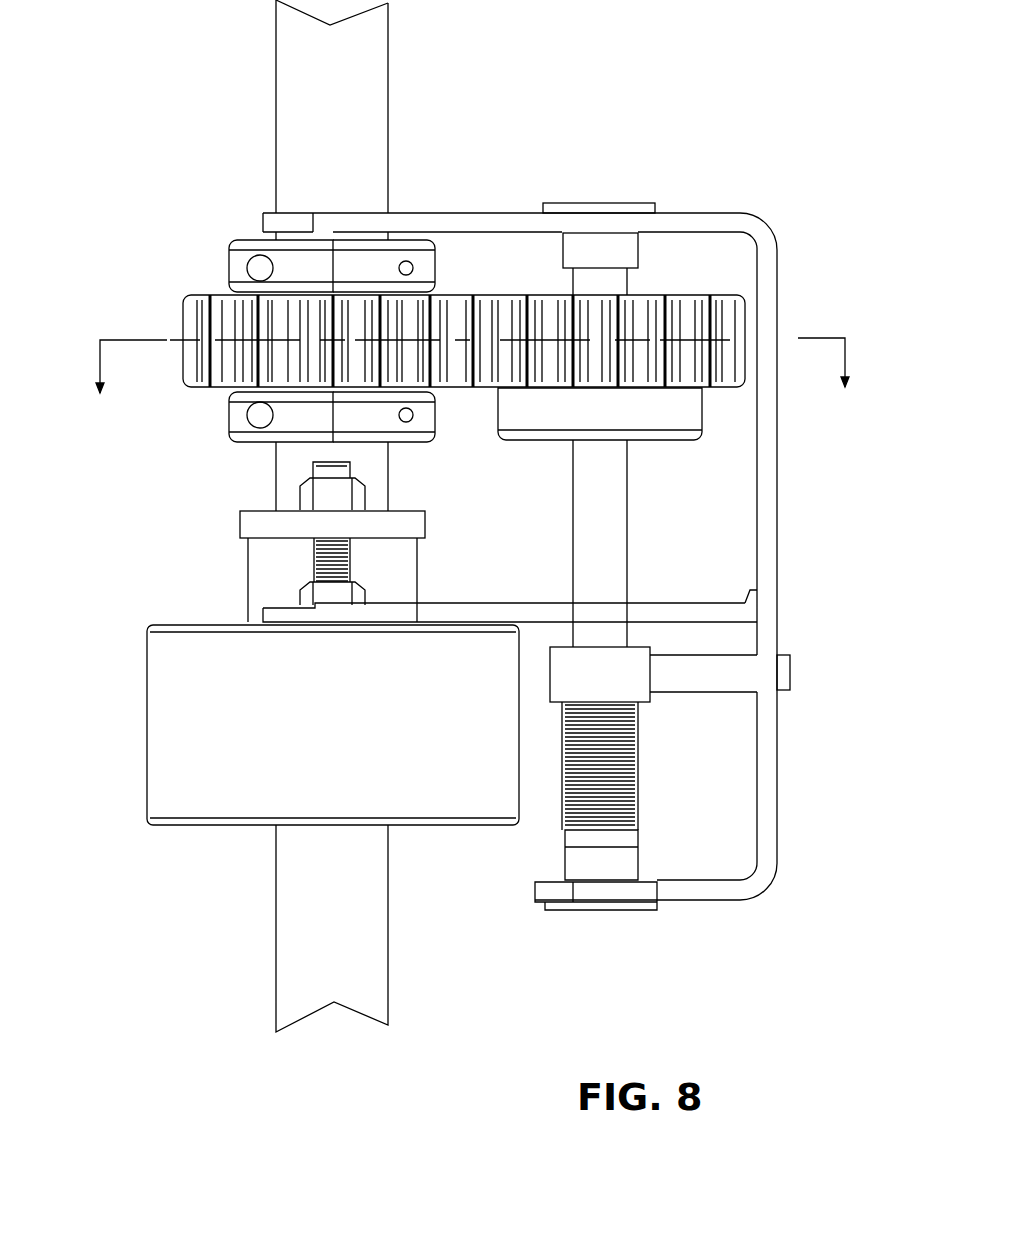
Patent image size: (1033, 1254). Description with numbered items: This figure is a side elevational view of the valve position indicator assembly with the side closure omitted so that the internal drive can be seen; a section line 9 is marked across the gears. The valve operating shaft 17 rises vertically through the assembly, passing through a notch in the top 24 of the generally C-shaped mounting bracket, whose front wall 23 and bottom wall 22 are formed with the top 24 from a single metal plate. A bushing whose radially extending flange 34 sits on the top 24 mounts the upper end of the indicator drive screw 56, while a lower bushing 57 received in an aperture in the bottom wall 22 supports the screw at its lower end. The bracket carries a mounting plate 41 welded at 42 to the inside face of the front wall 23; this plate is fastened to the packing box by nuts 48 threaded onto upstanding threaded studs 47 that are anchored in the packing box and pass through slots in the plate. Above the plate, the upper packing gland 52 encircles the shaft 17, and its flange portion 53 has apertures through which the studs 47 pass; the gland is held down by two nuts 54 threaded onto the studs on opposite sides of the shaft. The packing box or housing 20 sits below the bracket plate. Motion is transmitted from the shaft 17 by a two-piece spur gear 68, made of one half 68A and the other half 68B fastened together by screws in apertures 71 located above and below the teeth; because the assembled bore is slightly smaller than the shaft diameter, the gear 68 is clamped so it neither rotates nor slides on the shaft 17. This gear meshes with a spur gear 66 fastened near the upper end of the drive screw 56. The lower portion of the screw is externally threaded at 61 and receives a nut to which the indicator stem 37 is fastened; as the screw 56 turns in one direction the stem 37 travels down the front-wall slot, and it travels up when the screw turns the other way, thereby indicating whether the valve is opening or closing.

The valve operating shaft 17 is at (373, 88).
The motor housing 20 is at (180, 733).
The bottom wall 22 is at (713, 893).
The front wall 23 is at (768, 527).
The top 24 is at (467, 218).
The bushing flange 34 is at (612, 205).
The indicator stem 37 is at (790, 668).
The mounting plate 41 is at (705, 600).
The weld 42 is at (740, 642).
The threaded studs 47 is at (314, 552).
The nuts 48 is at (300, 596).
The upper packing gland 52 is at (260, 568).
The flange portion 53 is at (255, 528).
The nuts 54 is at (300, 493).
The indicator drive screw 56 is at (613, 525).
The lower bushing 57 is at (593, 907).
The external threads 61 is at (638, 763).
The spur gear 66 is at (720, 353).
The spur gear 68 is at (165, 307).
The gear half 68A is at (253, 243).
The gear half 68B is at (345, 280).
The apertures 71 is at (260, 267).
The section line 9- 9 is at (476, 365).